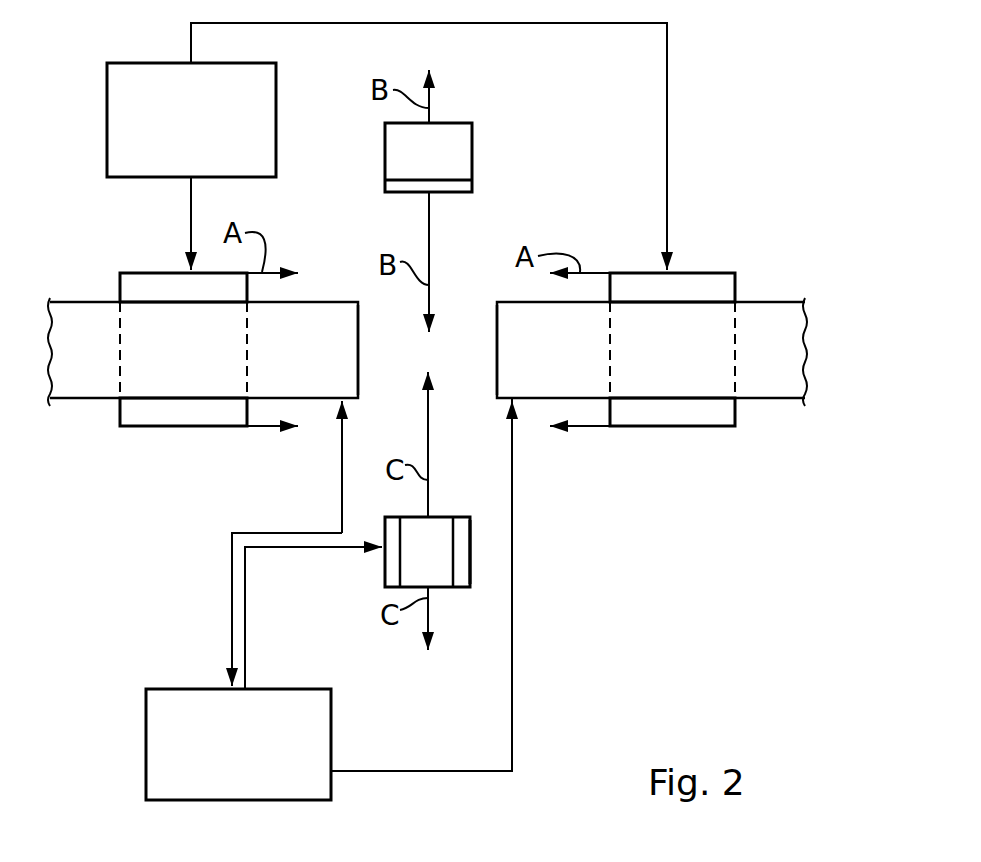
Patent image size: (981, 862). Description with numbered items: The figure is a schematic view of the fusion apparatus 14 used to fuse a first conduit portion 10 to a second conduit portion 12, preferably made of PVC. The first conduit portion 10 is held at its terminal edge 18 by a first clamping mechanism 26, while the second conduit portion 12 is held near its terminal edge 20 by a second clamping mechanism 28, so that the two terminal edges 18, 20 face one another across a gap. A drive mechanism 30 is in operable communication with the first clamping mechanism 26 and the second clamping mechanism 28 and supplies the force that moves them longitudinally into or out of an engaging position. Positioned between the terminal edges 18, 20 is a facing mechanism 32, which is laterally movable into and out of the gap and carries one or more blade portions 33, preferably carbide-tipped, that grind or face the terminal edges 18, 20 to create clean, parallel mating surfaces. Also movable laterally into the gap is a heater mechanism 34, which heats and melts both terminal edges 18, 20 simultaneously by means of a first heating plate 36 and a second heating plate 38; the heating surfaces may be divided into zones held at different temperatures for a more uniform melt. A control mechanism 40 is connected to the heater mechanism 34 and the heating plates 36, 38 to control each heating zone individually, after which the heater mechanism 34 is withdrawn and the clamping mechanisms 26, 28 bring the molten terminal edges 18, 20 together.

The first conduit portion 10 is at (90, 398).
The second conduit portion 12 is at (765, 398).
The fusion apparatus 14 is at (664, 590).
The terminal edge 18 is at (345, 345).
The terminal edge 20 is at (508, 348).
The first clamping mechanism 26 is at (168, 272).
The second clamping mechanism 28 is at (740, 284).
The drive mechanism 30 is at (107, 112).
The facing mechanism 32 is at (472, 130).
The blade portion 33 is at (472, 183).
The heater mechanism 34 is at (519, 589).
The first heating plate 36 is at (385, 565).
The second heating plate 38 is at (470, 575).
The control mechanism 40 is at (146, 755).